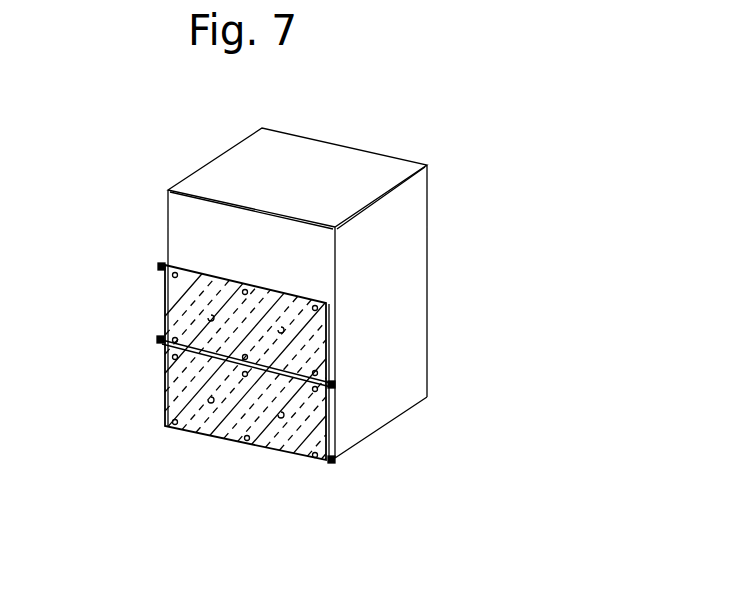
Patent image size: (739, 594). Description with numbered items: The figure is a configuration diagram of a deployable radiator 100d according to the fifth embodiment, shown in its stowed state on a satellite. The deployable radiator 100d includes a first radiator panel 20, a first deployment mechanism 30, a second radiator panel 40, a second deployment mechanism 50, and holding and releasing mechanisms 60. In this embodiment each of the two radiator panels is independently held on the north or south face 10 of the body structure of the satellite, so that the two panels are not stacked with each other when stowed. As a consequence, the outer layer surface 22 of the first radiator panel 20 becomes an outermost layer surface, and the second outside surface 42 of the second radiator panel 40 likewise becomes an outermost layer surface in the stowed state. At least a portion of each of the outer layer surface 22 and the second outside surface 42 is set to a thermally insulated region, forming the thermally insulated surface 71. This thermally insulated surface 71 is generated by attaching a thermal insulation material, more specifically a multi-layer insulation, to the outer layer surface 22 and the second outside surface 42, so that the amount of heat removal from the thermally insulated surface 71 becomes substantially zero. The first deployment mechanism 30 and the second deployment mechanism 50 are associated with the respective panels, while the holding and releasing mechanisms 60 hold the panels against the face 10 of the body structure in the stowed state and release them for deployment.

The north or south face of the body structure of a satellite 10 is at (218, 240).
The first radiator panel 20 is at (300, 445).
The outer layer surface 22 is at (167, 420).
The first deployment mechanism 30 is at (333, 459).
The second radiator panel 40 is at (317, 325).
The second outside surface 42 is at (262, 303).
The second deployment mechanism 50 is at (160, 338).
The holding and releasing mechanism 60 is at (244, 290).
The thermally insulated surface 71 is at (295, 313).
The deployable radiator 100d is at (608, 229).